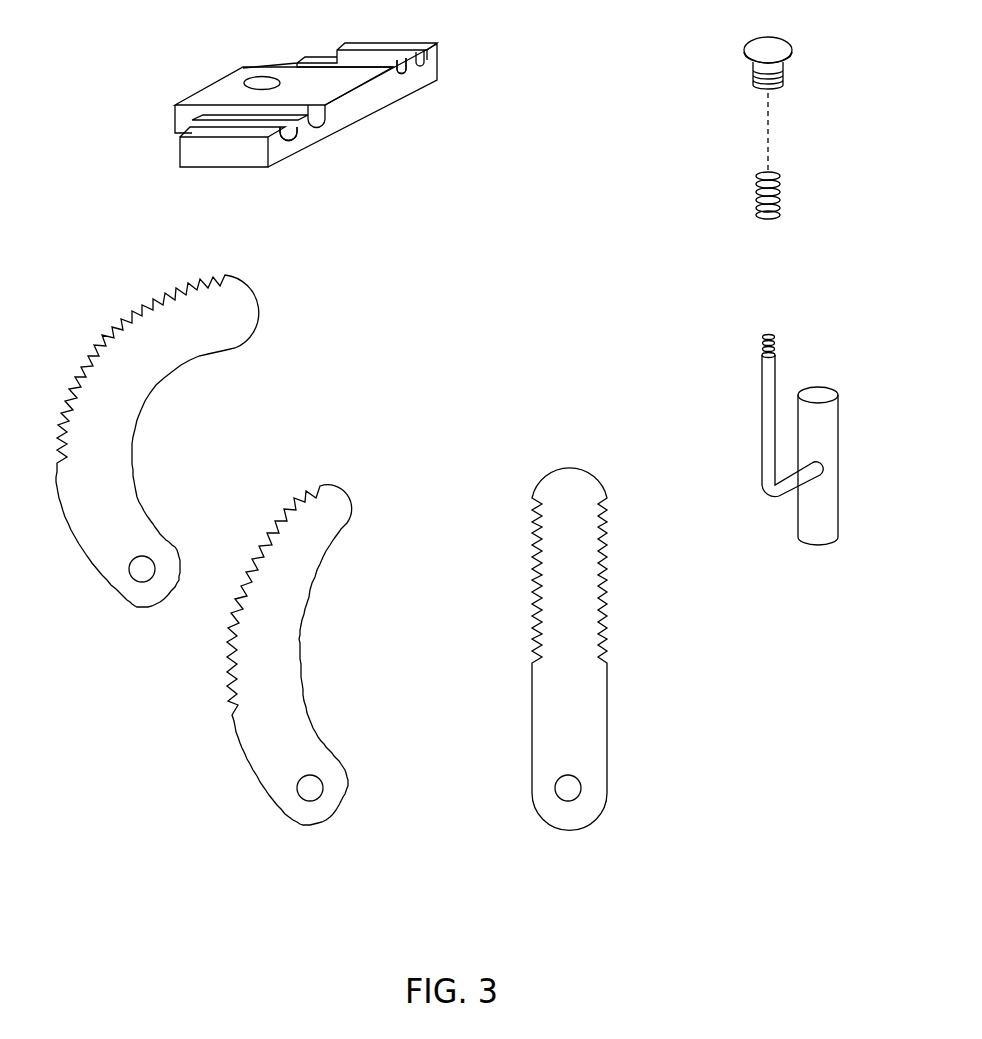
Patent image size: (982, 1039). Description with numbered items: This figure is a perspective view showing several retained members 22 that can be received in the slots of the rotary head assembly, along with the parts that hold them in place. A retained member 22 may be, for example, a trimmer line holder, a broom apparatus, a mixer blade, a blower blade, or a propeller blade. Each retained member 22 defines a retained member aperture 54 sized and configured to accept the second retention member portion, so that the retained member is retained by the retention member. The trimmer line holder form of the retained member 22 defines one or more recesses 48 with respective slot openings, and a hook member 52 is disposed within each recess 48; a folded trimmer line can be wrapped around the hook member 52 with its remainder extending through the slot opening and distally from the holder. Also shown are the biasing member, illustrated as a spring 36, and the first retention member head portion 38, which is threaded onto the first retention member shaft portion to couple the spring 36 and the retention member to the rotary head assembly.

The retained member 22 is at (365, 125).
The biasing member 36 is at (780, 193).
The first retention member head portion 38 is at (792, 52).
The recess 48 is at (423, 62).
The hook member 52 is at (298, 130).
The retained member aperture 54 is at (265, 77).